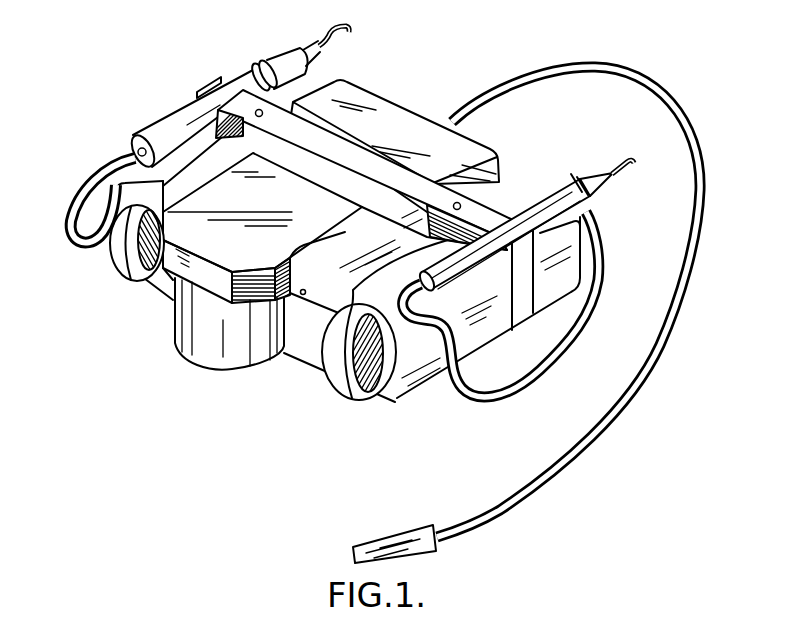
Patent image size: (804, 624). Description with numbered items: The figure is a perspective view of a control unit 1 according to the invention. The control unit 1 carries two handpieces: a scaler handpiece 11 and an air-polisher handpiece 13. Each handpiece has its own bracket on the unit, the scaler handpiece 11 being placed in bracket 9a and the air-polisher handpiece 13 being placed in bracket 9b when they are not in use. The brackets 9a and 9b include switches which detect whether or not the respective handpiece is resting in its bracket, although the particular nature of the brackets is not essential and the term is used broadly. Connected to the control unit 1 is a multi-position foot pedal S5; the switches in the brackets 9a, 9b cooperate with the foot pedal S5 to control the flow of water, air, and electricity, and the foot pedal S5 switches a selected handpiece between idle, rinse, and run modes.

The control unit 1 is at (443, 70).
The bracket 9a is at (219, 80).
The bracket 9b is at (511, 248).
The scaler handpiece 11 is at (281, 52).
The air-polisher handpiece 13 is at (609, 197).
The multi-position foot pedal S5 is at (369, 542).